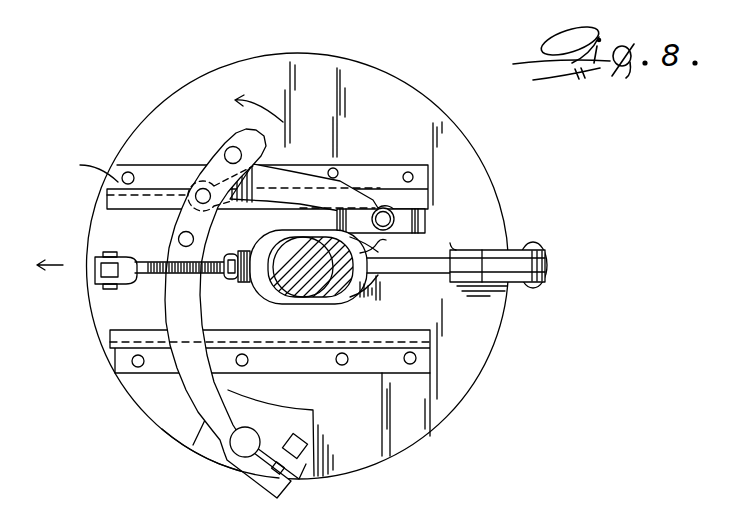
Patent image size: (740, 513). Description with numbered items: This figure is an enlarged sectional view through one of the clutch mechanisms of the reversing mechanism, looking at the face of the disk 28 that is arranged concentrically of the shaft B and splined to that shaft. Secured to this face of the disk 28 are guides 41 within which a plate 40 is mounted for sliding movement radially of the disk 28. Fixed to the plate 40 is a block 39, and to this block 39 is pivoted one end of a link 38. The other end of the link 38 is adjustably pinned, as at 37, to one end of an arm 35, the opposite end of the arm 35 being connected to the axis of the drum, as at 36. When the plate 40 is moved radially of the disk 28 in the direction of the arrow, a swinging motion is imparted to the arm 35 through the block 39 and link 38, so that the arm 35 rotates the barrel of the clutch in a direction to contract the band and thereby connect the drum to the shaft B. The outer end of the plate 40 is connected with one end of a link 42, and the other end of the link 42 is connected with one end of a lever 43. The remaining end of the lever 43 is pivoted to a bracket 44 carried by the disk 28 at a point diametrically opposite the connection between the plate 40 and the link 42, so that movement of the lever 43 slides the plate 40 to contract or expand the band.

The disk 28 is at (490, 228).
The arm 35 is at (202, 379).
The connection of arm to drum axis 36 is at (240, 446).
The adjustable pin connection 37 is at (190, 192).
The link 38 is at (293, 180).
The block 39 is at (423, 216).
The plate 40 is at (112, 303).
The guides 41 is at (72, 174).
The link 42 is at (157, 258).
The lever 43 is at (432, 268).
The bracket 44 is at (525, 249).
The shaft B is at (387, 247).